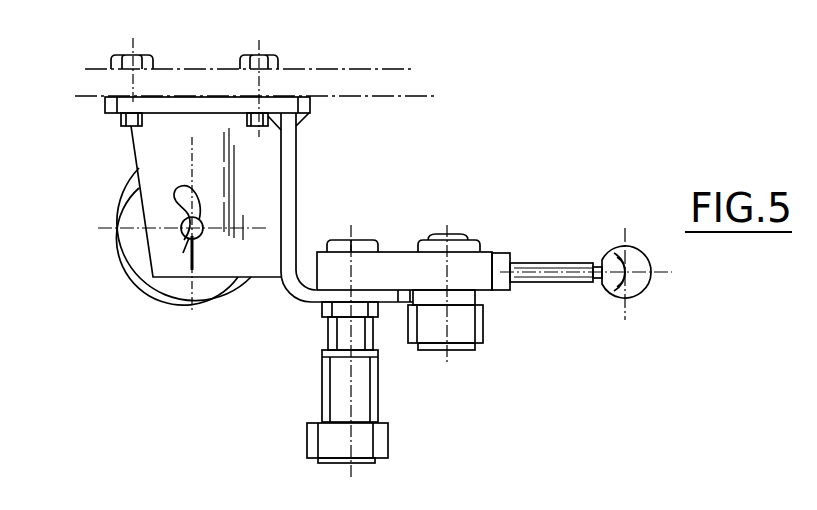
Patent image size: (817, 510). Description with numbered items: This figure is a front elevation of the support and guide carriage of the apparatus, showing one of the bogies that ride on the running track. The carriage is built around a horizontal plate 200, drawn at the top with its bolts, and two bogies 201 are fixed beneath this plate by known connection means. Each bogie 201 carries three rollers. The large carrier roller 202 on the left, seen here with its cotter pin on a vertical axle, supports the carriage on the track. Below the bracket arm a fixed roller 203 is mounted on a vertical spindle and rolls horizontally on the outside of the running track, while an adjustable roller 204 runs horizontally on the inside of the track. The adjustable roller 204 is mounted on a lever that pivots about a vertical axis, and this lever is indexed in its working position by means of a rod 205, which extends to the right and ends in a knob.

The horizontal plate 200 is at (385, 83).
The bogie 201 is at (315, 187).
The carrier roller 202 is at (180, 283).
The fixed roller 203 is at (372, 442).
The adjustable roller 204 is at (487, 327).
The rod 205 is at (577, 263).